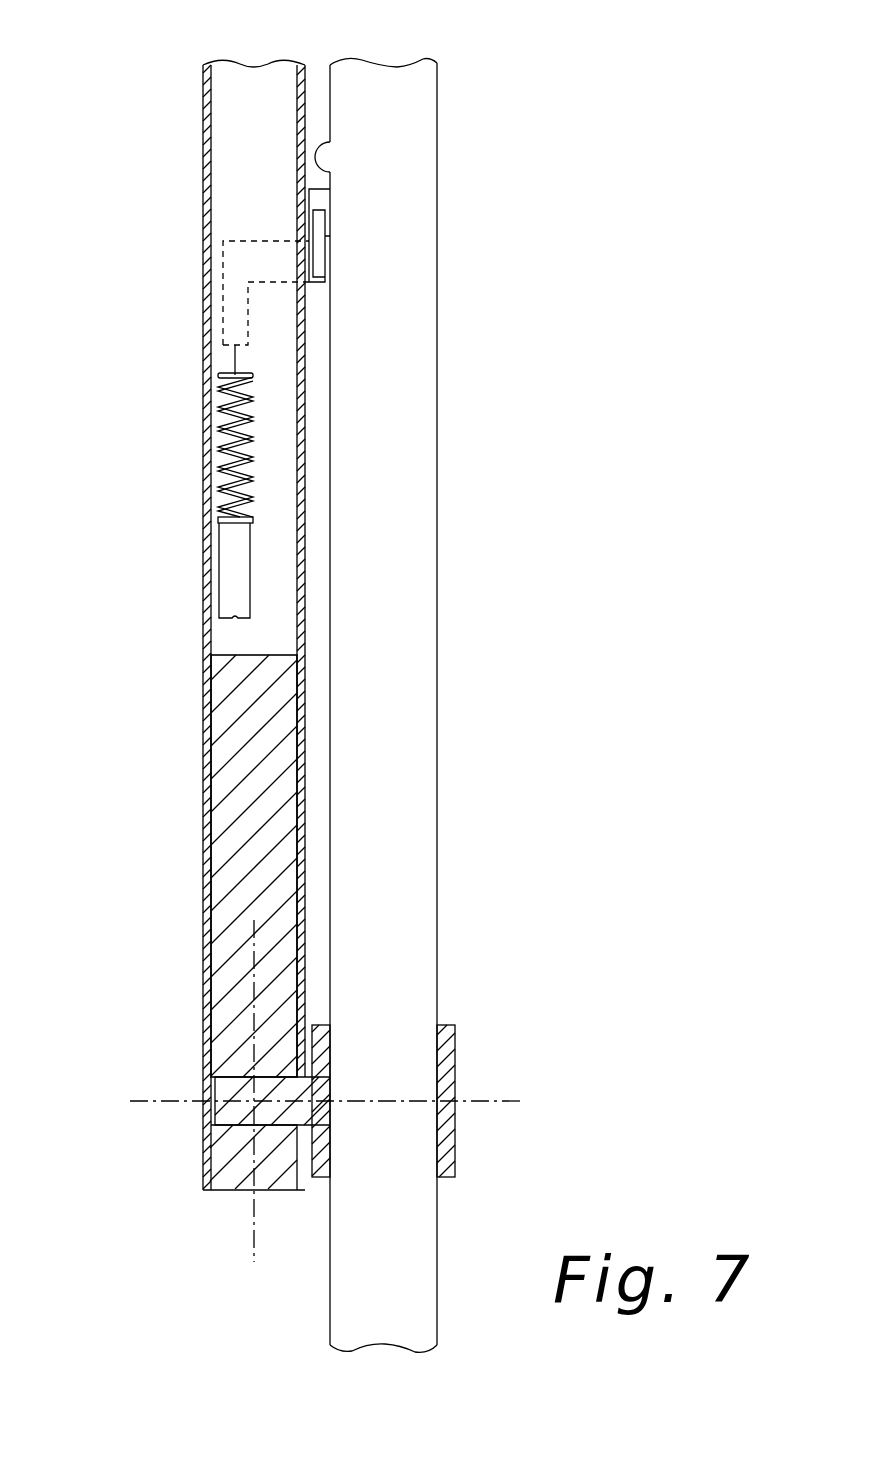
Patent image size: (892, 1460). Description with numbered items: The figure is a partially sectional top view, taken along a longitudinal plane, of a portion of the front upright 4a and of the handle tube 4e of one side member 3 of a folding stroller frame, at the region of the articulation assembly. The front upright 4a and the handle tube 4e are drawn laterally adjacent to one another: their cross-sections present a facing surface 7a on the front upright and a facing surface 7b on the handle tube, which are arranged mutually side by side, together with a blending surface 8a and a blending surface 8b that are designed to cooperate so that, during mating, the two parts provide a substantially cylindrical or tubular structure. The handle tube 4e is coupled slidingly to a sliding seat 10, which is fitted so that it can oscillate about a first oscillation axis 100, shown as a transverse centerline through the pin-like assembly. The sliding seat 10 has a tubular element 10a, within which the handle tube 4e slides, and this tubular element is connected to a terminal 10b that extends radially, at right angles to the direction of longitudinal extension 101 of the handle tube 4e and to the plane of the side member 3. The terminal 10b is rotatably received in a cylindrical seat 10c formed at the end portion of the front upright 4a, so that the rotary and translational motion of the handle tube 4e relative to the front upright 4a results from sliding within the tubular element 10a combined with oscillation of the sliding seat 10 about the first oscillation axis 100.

The side member 3 is at (456, 239).
The front upright 4a is at (240, 186).
The handle tube 4e is at (411, 496).
The facing surface 7a is at (306, 115).
The facing surface 7b is at (333, 172).
The blending surface 8a is at (203, 128).
The blending surface 8b is at (437, 272).
The sliding seat 10 is at (472, 1140).
The tubular element 10a is at (437, 1157).
The terminal 10b is at (237, 1078).
The cylindrical seat 10c is at (236, 1130).
The first oscillation axis 100 is at (407, 1085).
The direction of longitudinal extension 101 is at (238, 1252).